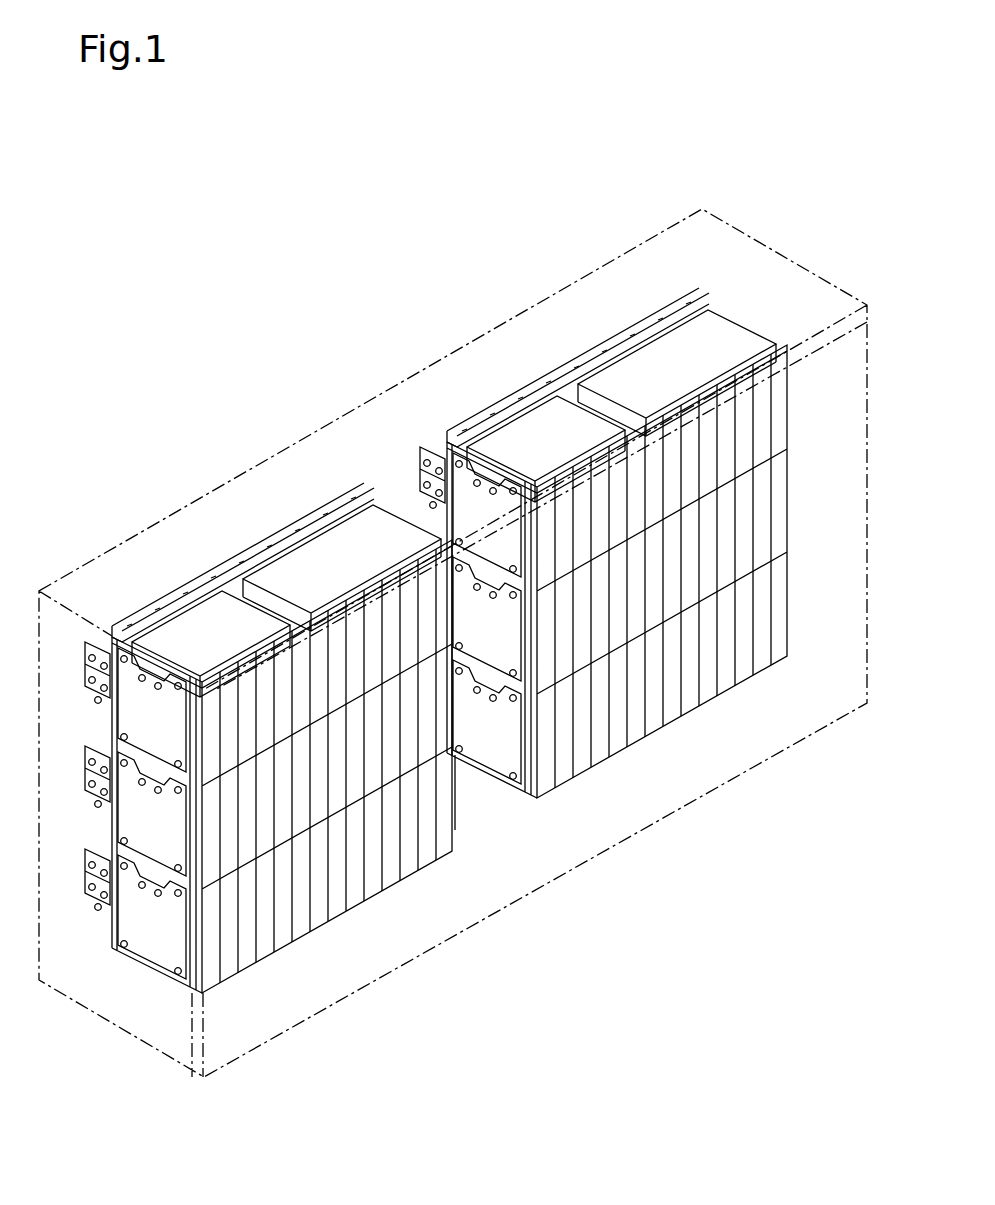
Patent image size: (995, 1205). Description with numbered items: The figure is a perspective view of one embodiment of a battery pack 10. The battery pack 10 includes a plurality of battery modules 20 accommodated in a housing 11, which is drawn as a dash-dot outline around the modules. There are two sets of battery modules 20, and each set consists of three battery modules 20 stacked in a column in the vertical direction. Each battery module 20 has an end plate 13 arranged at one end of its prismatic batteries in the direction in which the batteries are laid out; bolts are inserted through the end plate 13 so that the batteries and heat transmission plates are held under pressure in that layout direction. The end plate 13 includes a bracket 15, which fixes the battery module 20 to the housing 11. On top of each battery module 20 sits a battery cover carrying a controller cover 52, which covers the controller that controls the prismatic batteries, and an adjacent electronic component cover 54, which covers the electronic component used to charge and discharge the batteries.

The battery pack 10 is at (283, 214).
The housing 11 is at (581, 866).
The end plate 13 is at (150, 948).
The bracket 15 is at (98, 700).
The battery module 20 is at (790, 402).
The controller cover 52 is at (190, 617).
The electronic component cover 54 is at (282, 563).